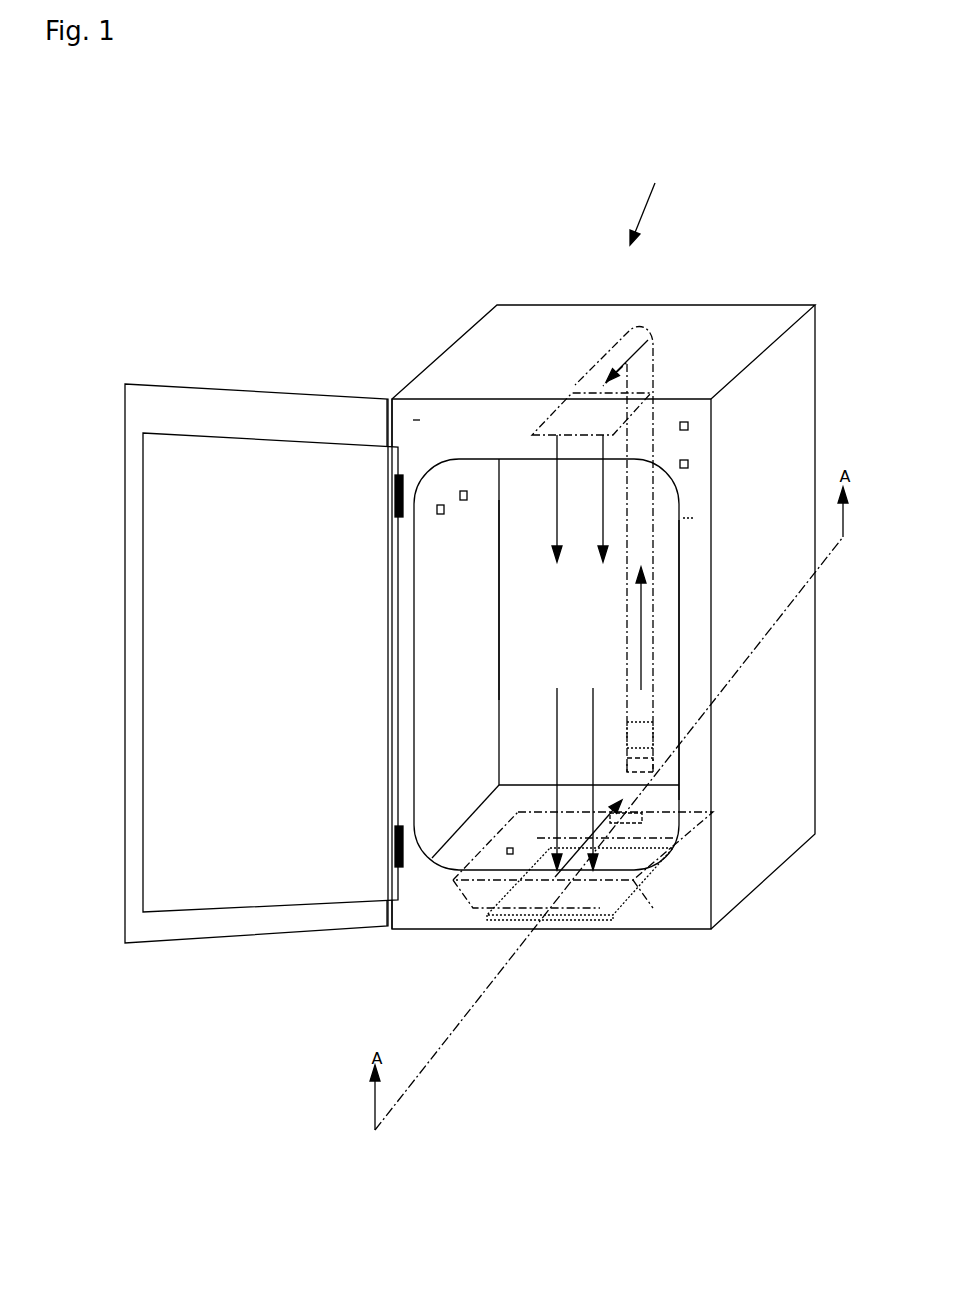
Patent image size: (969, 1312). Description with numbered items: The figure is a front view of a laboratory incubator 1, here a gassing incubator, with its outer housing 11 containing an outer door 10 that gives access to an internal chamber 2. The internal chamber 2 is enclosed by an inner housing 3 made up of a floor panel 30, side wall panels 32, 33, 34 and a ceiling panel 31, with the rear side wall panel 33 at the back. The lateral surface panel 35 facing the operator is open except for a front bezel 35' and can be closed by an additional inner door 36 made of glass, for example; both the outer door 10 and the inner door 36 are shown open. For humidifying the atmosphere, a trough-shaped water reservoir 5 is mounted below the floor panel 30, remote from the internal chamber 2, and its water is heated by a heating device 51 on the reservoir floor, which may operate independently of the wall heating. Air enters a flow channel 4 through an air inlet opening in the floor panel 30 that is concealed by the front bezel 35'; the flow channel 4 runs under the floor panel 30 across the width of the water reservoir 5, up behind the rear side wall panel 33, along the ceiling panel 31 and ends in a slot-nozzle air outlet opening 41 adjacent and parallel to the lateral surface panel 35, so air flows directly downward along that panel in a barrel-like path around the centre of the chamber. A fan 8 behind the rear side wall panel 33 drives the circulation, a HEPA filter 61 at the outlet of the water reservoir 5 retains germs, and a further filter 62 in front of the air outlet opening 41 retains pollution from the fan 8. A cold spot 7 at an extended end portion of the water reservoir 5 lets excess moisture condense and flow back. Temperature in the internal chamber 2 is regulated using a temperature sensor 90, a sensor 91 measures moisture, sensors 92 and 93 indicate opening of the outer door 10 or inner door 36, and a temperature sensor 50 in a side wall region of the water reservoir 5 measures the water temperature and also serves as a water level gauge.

The laboratory incubator 1 is at (647, 198).
The internal chamber 2 is at (520, 561).
The inner housing 3 is at (468, 621).
The flow channel 4 is at (647, 660).
The water reservoir 5 is at (590, 895).
The cold spot 7 is at (633, 818).
The fan 8 is at (650, 730).
The outer door 10 is at (202, 415).
The outer housing 11 is at (777, 315).
The floor panel 30 is at (463, 842).
The ceiling panel 31 is at (505, 458).
The side wall panel 32 is at (680, 518).
The rear side wall panel 33 is at (502, 736).
The side wall panel 34 is at (440, 639).
The lateral surface panel 35 is at (506, 664).
The front bezel 35' is at (385, 367).
The inner door 36 is at (263, 470).
The air outlet opening 41 is at (593, 433).
The temperature sensor 50 is at (507, 855).
The heating device 51 is at (505, 915).
The HEPA filter 61 is at (650, 767).
The filter 62 is at (590, 385).
The temperature sensor 90 is at (440, 505).
The sensor 91 is at (463, 491).
The sensor 92 is at (688, 425).
The sensor 93 is at (688, 465).